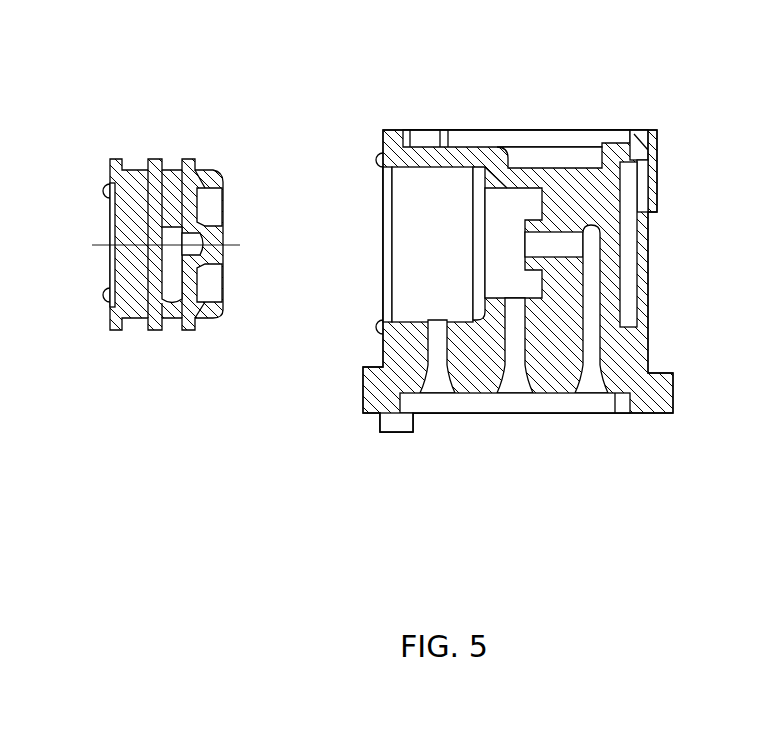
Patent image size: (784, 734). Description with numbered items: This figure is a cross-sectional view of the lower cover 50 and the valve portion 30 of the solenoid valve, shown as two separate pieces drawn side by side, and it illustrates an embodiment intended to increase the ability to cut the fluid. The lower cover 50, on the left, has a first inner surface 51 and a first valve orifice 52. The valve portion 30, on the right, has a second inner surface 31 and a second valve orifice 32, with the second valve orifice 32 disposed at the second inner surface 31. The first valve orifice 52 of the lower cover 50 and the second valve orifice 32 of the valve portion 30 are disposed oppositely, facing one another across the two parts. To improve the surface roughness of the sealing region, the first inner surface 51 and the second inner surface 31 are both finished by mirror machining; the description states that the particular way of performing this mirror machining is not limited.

The valve portion 30 is at (555, 223).
The second inner surface 31 is at (527, 236).
The second valve orifice 32 is at (525, 243).
The lower cover 50 is at (172, 193).
The first inner surface 51 is at (223, 185).
The first valve orifice 52 is at (203, 233).